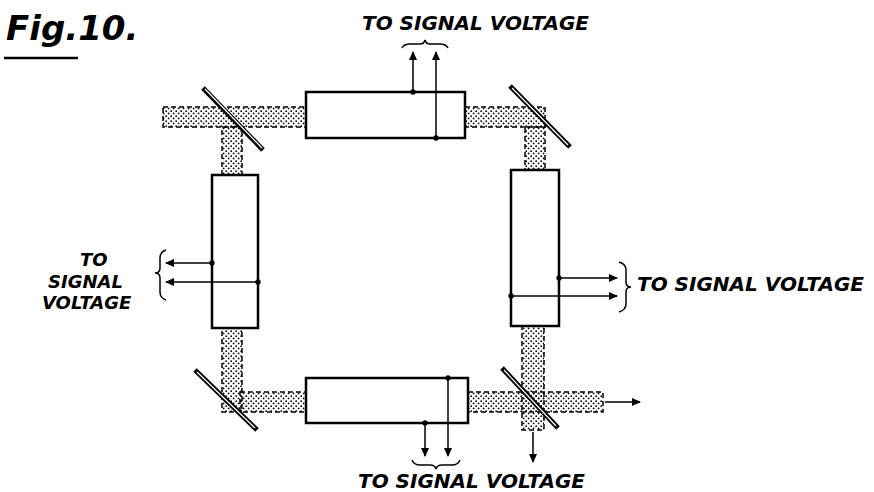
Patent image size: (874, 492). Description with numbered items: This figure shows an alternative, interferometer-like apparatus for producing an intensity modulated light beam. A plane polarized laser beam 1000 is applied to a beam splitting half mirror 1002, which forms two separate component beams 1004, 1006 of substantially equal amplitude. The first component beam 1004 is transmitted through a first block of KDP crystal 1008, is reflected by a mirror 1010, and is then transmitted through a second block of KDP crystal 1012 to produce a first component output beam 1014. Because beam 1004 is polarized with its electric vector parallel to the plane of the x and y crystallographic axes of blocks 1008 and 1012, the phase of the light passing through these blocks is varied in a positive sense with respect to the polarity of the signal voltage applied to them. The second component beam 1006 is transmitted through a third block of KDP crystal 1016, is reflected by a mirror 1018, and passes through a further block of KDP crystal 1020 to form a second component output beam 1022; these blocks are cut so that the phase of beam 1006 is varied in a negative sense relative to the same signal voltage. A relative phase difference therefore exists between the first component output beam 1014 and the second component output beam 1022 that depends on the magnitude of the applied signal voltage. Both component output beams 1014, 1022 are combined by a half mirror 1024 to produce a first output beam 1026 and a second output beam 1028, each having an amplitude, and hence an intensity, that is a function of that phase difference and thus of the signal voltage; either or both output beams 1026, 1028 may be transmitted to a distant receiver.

The plane polarized laser beam 1000 is at (186, 106).
The beam splitting half mirror 1002 is at (222, 96).
The first component beam 1004 is at (270, 128).
The second component beam 1006 is at (220, 150).
The first block of KDP crystal 1008 is at (339, 92).
The mirror 1010 is at (536, 104).
The second block of KDP crystal 1012 is at (561, 240).
The first component output beam 1014 is at (545, 370).
The third block of KDP crystal 1016 is at (260, 267).
The mirror 1018 is at (250, 432).
The block of KDP crystal 1020 is at (320, 378).
The second component output beam 1022 is at (516, 414).
The half mirror 1024 is at (508, 366).
The first output beam 1026 is at (596, 390).
The second output beam 1028 is at (546, 437).